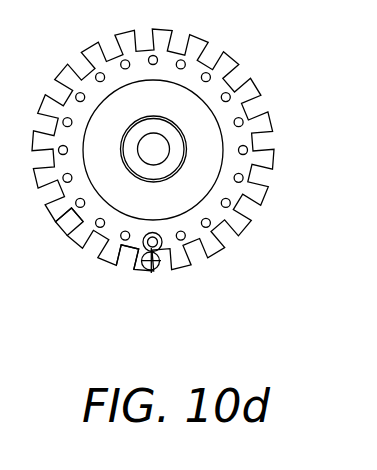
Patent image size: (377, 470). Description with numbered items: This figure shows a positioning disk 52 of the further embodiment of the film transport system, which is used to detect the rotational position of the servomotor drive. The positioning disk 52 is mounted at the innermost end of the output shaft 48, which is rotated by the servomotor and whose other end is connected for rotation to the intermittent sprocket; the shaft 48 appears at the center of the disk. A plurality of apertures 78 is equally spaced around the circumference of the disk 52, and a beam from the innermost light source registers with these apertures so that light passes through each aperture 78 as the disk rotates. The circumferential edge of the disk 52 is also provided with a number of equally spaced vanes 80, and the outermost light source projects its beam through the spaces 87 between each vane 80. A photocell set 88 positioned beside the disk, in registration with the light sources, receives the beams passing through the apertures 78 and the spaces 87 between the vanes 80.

The second positioning disk 52 is at (128, 32).
The output shaft 48 is at (158, 151).
The apertures 78 is at (209, 226).
The vanes 80 is at (67, 236).
The spaces between vanes 87 is at (127, 258).
The photocell set 88 is at (166, 262).